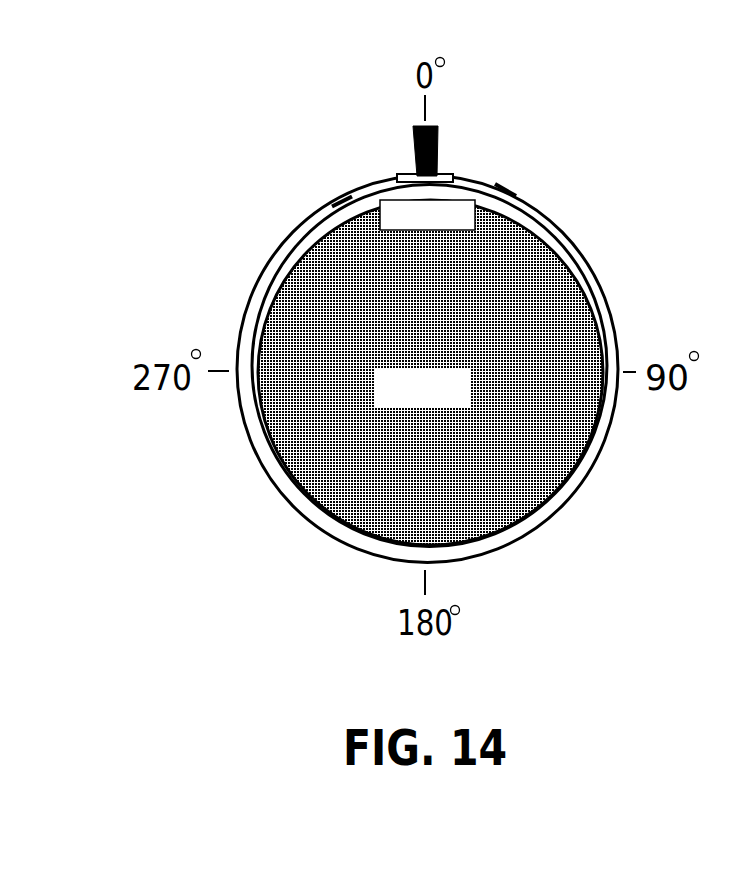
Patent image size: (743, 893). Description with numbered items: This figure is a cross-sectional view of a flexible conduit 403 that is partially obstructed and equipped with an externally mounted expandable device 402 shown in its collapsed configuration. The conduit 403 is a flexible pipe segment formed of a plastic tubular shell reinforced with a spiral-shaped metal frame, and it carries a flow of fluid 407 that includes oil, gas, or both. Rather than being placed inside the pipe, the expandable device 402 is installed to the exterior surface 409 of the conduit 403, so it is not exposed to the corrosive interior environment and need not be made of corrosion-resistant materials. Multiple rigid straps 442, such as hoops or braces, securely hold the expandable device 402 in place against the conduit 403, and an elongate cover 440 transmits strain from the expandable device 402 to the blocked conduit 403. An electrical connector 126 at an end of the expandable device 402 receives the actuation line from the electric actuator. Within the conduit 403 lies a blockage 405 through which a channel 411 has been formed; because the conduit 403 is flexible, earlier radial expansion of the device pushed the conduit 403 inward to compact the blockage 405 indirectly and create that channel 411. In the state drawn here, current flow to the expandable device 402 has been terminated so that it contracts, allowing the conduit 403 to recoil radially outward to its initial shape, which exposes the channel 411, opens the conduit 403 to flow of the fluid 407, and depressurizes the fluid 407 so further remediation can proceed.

The electrical connector 126 is at (413, 128).
The expandable device 402 is at (449, 176).
The flexible conduit 403 is at (473, 369).
The exterior surface 409 is at (574, 236).
The blockage 405 is at (449, 398).
The fluid 407 is at (282, 251).
The channel 411 is at (383, 225).
The elongate cover 440 is at (512, 200).
The rigid straps 442 is at (300, 217).